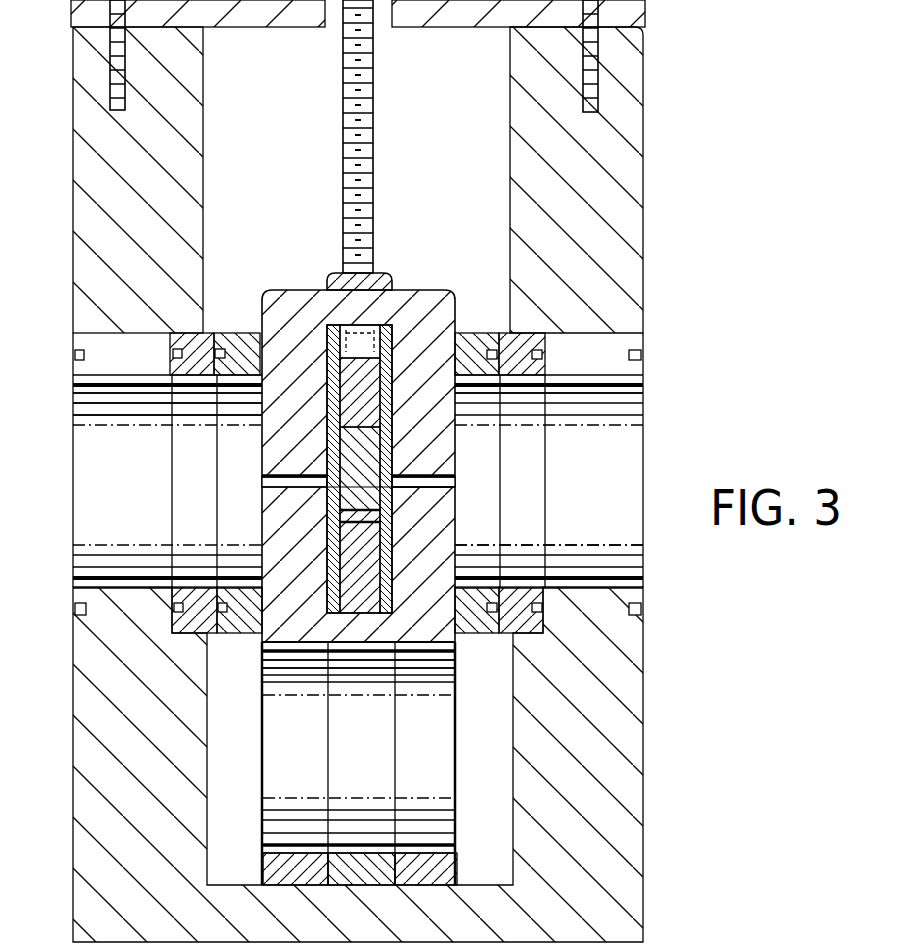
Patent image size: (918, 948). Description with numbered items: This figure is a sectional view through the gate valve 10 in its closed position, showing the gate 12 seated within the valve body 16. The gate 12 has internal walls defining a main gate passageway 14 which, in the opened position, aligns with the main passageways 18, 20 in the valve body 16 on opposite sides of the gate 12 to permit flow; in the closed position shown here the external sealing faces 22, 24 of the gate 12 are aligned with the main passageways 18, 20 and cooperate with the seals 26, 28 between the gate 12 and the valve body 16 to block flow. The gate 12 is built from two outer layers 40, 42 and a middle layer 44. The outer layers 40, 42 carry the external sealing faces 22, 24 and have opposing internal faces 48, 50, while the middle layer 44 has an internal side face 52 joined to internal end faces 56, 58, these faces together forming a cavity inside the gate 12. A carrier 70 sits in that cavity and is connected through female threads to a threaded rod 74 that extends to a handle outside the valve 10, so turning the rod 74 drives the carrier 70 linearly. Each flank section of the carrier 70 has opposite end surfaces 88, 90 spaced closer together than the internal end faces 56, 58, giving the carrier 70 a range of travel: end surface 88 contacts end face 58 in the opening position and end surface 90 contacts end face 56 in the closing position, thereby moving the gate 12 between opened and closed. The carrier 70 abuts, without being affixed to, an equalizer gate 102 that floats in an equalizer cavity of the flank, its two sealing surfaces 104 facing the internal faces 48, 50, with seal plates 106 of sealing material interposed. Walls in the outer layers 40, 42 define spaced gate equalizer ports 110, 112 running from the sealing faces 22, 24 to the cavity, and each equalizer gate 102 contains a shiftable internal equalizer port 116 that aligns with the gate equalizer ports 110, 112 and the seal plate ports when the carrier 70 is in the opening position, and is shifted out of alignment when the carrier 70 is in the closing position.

The gate valve 10 is at (714, 157).
The gate 12 is at (330, 385).
The main gate passageway 14 is at (290, 845).
The valve body 16 is at (608, 662).
The main passageway 18 is at (620, 460).
The main passageway 20 is at (90, 498).
The external sealing face 22 is at (455, 465).
The external sealing face 24 is at (262, 455).
The seal 26 is at (598, 578).
The seal 28 is at (233, 528).
The outer layer 40 is at (455, 638).
The outer layer 42 is at (262, 640).
The middle layer 44 is at (362, 660).
The internal face 48 is at (455, 545).
The internal face 50 is at (295, 335).
The internal side face 52 is at (395, 400).
The internal end face 56 is at (388, 660).
The internal end face 58 is at (360, 330).
The carrier 70 is at (345, 600).
The threaded rod 74 is at (372, 120).
The end surface 88 is at (335, 345).
The end surface 90 is at (378, 645).
The equalizer gate 102 is at (456, 336).
The sealing surface 104 is at (262, 440).
The seal plate 106 is at (330, 650).
The gate equalizer port 110 is at (455, 480).
The gate equalizer port 112 is at (290, 478).
The internal equalizer port 116 is at (335, 522).